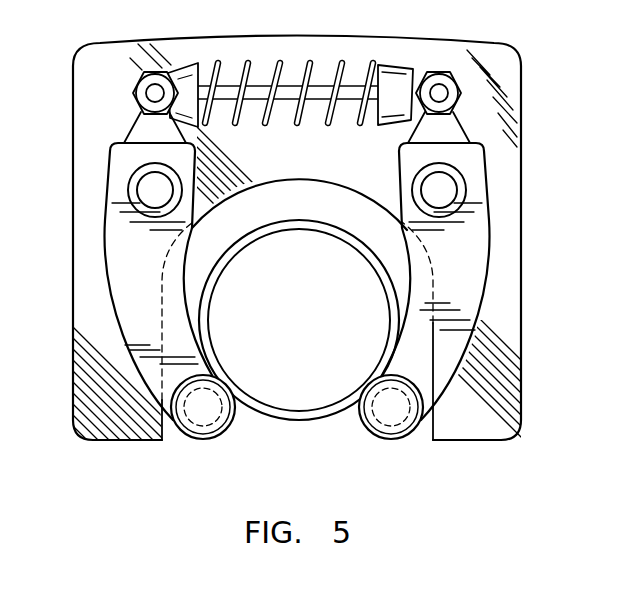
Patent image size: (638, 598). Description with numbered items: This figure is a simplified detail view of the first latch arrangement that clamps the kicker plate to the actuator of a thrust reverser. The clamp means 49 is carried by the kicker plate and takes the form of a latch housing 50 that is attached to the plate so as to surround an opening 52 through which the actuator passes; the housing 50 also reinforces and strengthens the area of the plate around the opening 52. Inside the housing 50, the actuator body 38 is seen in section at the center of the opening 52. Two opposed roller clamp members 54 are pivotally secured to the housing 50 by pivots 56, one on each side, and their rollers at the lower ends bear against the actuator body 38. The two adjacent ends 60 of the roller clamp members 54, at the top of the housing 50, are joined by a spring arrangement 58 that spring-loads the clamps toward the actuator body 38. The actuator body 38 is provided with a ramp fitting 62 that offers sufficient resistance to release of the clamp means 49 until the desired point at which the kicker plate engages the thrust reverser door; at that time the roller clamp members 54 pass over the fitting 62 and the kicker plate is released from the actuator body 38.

The actuator body 38 is at (338, 238).
The clamp means 49 is at (228, 450).
The latch housing 50 is at (521, 168).
The opening 52 is at (276, 182).
The roller clamp members 54 is at (489, 310).
The pivots 56 is at (443, 210).
The spring arrangement 58 is at (314, 64).
The adjacent ends 60 is at (463, 110).
The ramp fitting 62 is at (197, 332).